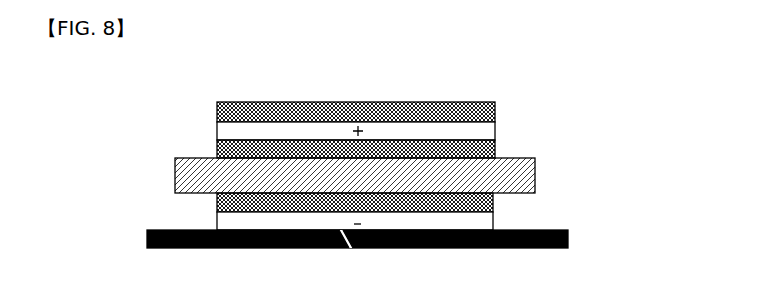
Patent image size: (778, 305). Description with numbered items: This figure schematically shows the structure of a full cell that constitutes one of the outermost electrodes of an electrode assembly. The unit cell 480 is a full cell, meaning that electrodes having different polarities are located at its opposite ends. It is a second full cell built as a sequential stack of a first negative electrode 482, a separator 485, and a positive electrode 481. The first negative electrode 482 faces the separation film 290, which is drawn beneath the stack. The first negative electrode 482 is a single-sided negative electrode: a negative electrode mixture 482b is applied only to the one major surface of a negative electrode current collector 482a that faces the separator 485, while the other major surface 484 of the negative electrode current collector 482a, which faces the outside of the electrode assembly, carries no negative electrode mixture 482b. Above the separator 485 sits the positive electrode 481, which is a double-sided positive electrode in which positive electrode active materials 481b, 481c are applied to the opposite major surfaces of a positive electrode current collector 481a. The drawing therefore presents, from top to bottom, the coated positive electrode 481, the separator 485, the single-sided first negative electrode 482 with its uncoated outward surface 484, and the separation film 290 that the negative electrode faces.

The unit cell 480 is at (370, 170).
The positive electrode 481 is at (268, 121).
The positive electrode current collector 481a is at (217, 130).
The positive electrode active material 481b is at (217, 108).
The positive electrode active material 481c is at (217, 152).
The first negative electrode 482 is at (267, 212).
The negative electrode current collector 482a is at (217, 224).
The negative electrode mixture 482b is at (217, 200).
The other major surface 484 is at (351, 248).
The separator 485 is at (537, 172).
The separation film 290 is at (570, 234).